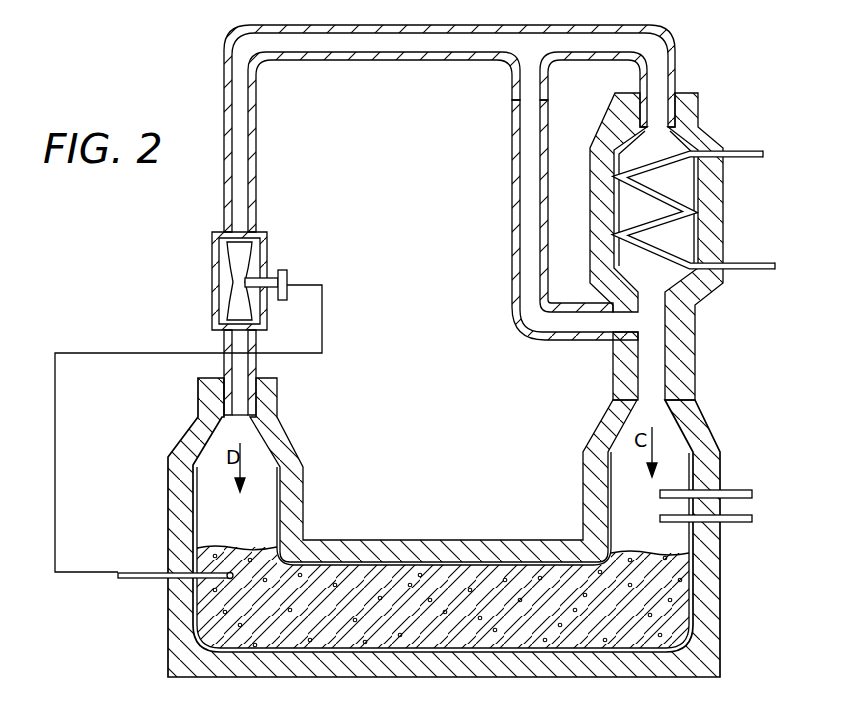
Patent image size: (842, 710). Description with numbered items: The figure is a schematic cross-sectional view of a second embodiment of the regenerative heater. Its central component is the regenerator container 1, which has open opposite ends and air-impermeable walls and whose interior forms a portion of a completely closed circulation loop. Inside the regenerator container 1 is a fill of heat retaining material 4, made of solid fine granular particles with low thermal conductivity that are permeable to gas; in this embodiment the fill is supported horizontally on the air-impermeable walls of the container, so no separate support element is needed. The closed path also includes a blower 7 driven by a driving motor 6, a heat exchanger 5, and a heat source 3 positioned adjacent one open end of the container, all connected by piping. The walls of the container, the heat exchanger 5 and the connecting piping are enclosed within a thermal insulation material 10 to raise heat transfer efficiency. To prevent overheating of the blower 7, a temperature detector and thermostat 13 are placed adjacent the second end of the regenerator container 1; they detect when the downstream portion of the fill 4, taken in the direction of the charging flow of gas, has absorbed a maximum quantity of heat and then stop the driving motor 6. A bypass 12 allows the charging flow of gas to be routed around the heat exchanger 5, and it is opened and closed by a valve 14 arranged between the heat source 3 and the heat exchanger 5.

The regenerator container 1 is at (342, 562).
The heat source 3 is at (740, 490).
The fill of heat retaining material 4 is at (425, 577).
The heat exchanger 5 is at (667, 160).
The driving motor 6 is at (283, 270).
The blower 7 is at (230, 248).
The thermal insulation material 10 is at (495, 552).
The bypass 12 is at (512, 203).
The temperature detector and thermostat 13 is at (137, 572).
The valve 14 is at (648, 318).